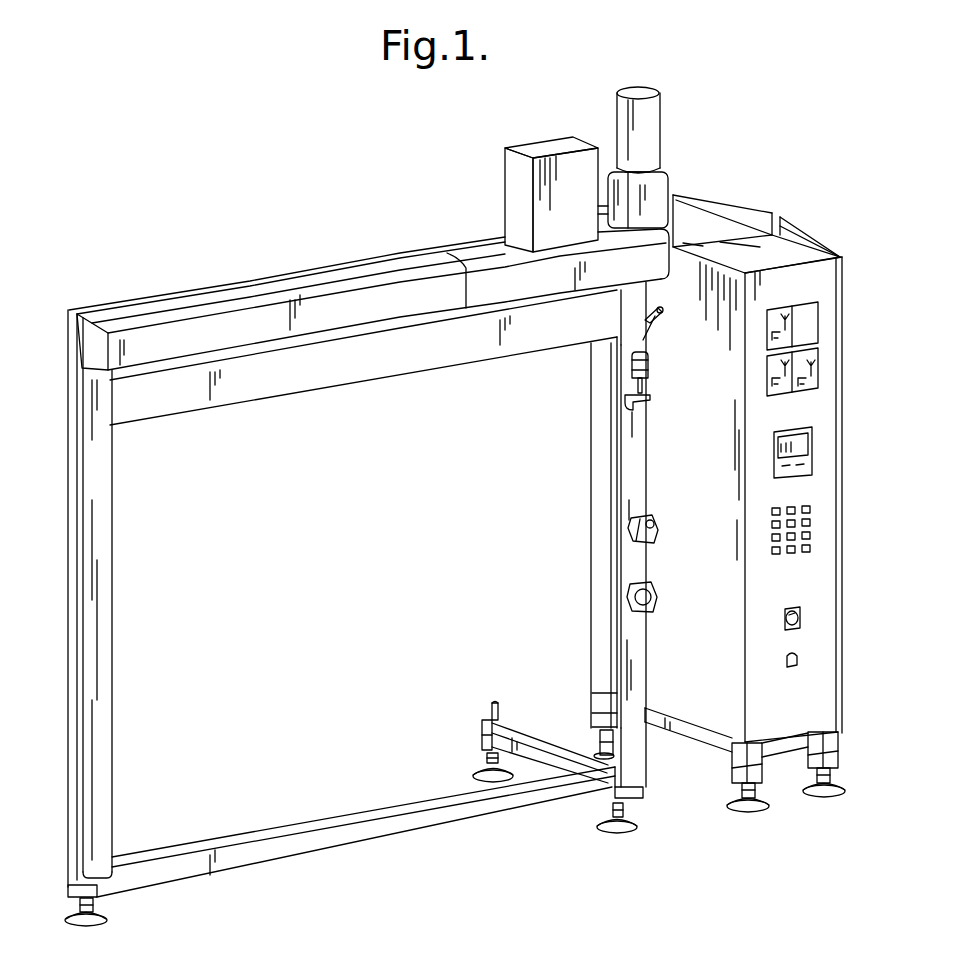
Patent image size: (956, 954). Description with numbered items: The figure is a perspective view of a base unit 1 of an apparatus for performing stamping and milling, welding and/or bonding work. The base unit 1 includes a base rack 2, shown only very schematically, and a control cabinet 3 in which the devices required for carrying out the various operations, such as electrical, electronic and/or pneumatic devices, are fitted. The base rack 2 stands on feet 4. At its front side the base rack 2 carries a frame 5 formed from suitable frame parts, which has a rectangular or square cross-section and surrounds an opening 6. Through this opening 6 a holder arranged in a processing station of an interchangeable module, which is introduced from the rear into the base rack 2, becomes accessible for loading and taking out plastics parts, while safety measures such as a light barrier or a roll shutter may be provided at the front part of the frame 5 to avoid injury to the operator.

The base unit 1 is at (164, 277).
The base rack 2 is at (632, 765).
The control cabinet 3 is at (797, 283).
The feet 4 is at (72, 919).
The frame 5 is at (358, 350).
The opening 6 is at (470, 475).